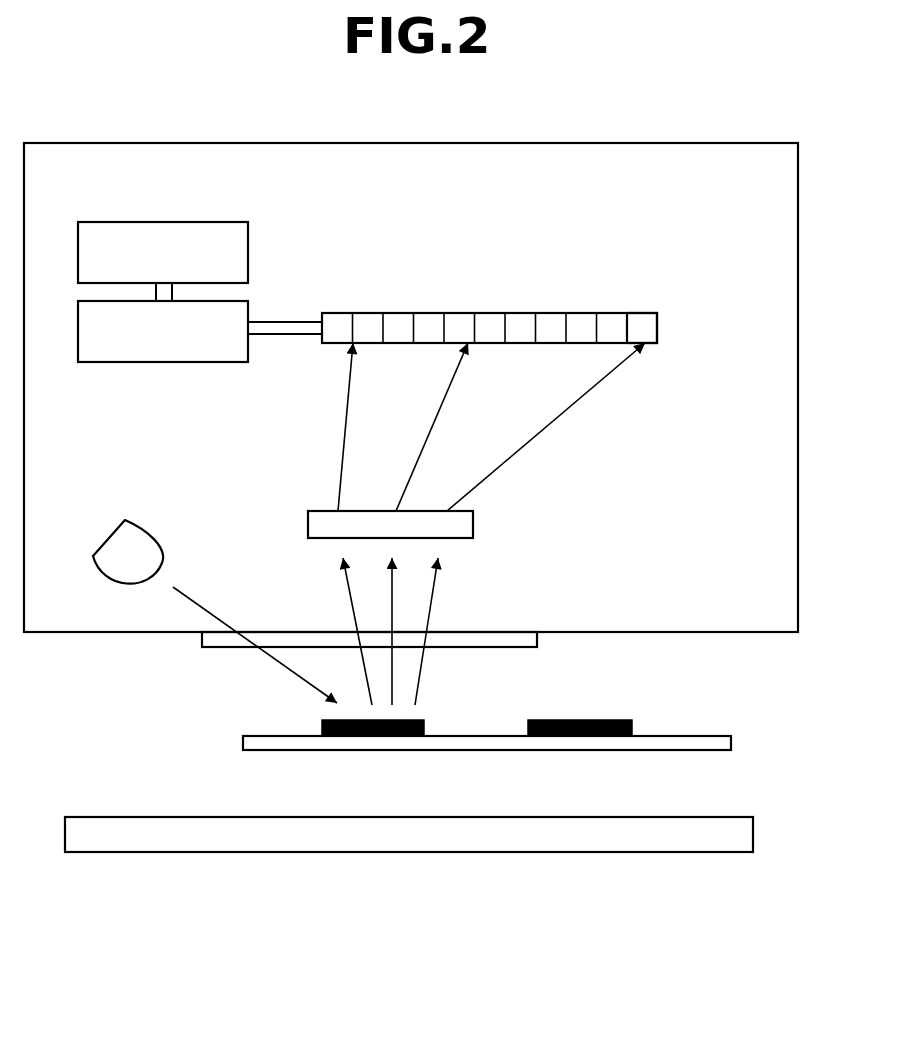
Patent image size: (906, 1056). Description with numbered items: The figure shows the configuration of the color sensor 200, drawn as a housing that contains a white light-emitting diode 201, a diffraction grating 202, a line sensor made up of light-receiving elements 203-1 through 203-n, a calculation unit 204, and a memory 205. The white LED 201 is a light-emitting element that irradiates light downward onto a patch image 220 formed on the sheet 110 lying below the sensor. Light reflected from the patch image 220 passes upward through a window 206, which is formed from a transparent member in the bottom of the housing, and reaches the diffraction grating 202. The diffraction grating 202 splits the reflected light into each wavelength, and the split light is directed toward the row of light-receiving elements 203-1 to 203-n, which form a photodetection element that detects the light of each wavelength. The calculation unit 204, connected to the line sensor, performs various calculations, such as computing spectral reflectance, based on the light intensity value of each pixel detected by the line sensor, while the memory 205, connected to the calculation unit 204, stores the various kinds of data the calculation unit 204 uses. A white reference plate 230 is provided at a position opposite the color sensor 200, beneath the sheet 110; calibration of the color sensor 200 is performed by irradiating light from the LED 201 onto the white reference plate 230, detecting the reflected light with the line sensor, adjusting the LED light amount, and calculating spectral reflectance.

The color sensor 200 is at (548, 143).
The white light-emitting diode 201 is at (136, 526).
The diffraction grating 202 is at (473, 523).
The light-receiving element 203-1 is at (352, 313).
The light-receiving element 203-n is at (657, 328).
The calculation unit 204 is at (165, 362).
The memory 205 is at (161, 222).
The window 206 is at (537, 640).
The patch image 220 is at (322, 728).
The sheet 110 is at (293, 750).
The white reference plate 230 is at (257, 852).